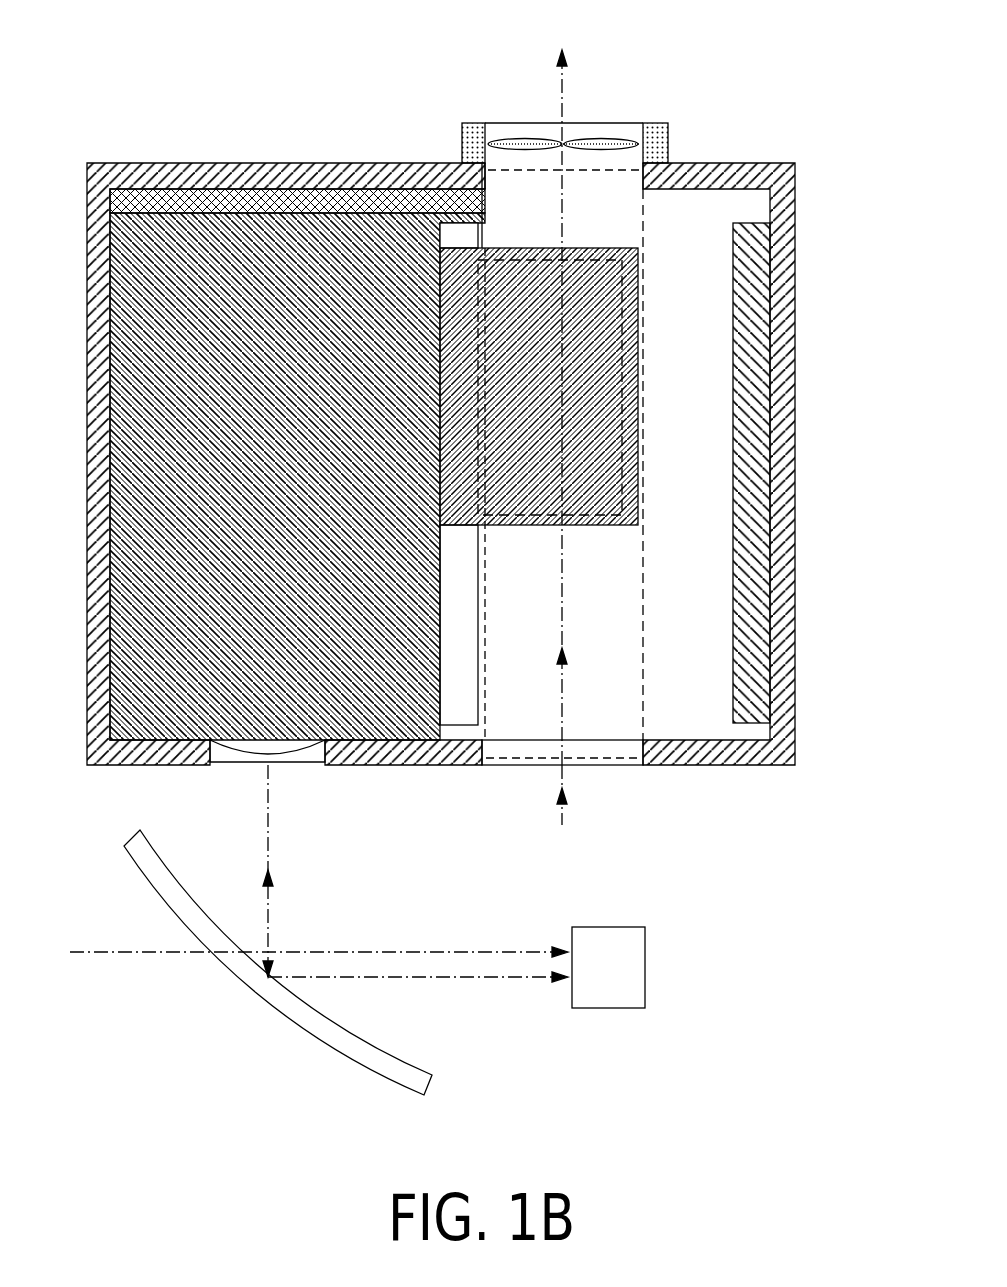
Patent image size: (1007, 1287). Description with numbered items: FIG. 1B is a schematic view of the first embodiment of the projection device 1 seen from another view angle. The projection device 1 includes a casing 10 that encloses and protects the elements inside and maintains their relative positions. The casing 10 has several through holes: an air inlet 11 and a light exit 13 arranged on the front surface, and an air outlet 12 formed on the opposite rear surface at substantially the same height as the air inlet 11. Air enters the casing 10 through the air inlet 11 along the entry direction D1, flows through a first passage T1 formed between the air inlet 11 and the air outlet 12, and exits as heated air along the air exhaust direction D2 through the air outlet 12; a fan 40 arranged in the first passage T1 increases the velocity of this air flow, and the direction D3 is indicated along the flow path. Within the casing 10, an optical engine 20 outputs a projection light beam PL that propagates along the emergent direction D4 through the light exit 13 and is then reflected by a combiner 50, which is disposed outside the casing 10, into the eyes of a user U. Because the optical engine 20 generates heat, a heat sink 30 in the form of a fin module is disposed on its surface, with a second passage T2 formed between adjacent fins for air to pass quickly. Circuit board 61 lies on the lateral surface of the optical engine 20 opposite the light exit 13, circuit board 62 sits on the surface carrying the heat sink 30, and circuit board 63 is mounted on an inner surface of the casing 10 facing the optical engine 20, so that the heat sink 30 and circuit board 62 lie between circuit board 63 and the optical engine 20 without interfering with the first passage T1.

The projection device 1 is at (763, 110).
The casing 10 is at (86, 765).
The air inlet 11 is at (627, 766).
The air outlet 12 is at (640, 125).
The light exit 13 is at (222, 765).
The optical engine 20 is at (178, 731).
The heat sink 30 is at (614, 525).
The fan 40 is at (493, 124).
The combiner 50 is at (287, 1028).
The circuit board 61 is at (318, 187).
The circuit board 62 is at (462, 587).
The circuit board 63 is at (770, 265).
The first passage T1 is at (644, 628).
The second passage T2 is at (623, 350).
The entry direction D1 is at (564, 800).
The air exhaust direction D2 is at (560, 52).
The third direction D3 is at (566, 660).
The emergent direction D4 is at (271, 885).
The projection light beam PL is at (270, 797).
The user U is at (588, 1010).